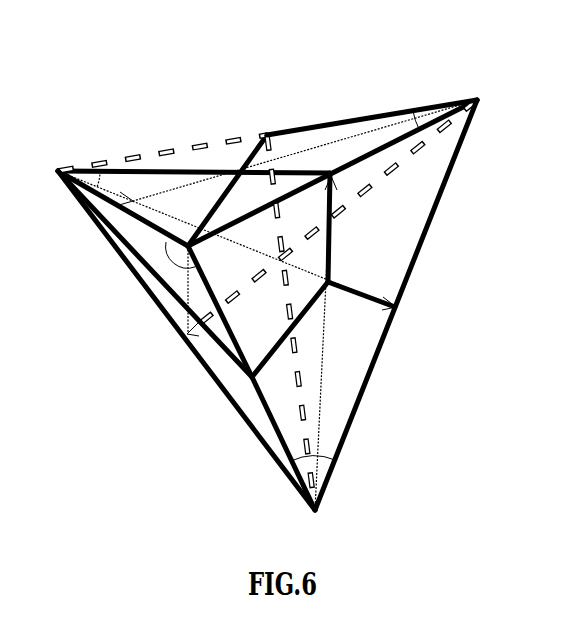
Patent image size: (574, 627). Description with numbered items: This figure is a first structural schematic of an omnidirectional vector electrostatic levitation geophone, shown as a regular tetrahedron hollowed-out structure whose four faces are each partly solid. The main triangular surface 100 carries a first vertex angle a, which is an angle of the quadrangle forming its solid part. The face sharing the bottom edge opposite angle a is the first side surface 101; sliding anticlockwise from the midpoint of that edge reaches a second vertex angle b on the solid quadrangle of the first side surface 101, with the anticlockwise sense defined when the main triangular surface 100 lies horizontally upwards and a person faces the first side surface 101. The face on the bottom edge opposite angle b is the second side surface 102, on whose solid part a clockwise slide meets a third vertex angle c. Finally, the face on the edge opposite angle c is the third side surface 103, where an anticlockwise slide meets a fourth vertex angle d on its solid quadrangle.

The main triangular surface 100 is at (352, 130).
The first side surface 101 is at (116, 218).
The second side surface 102 is at (295, 143).
The third side surface 103 is at (398, 242).